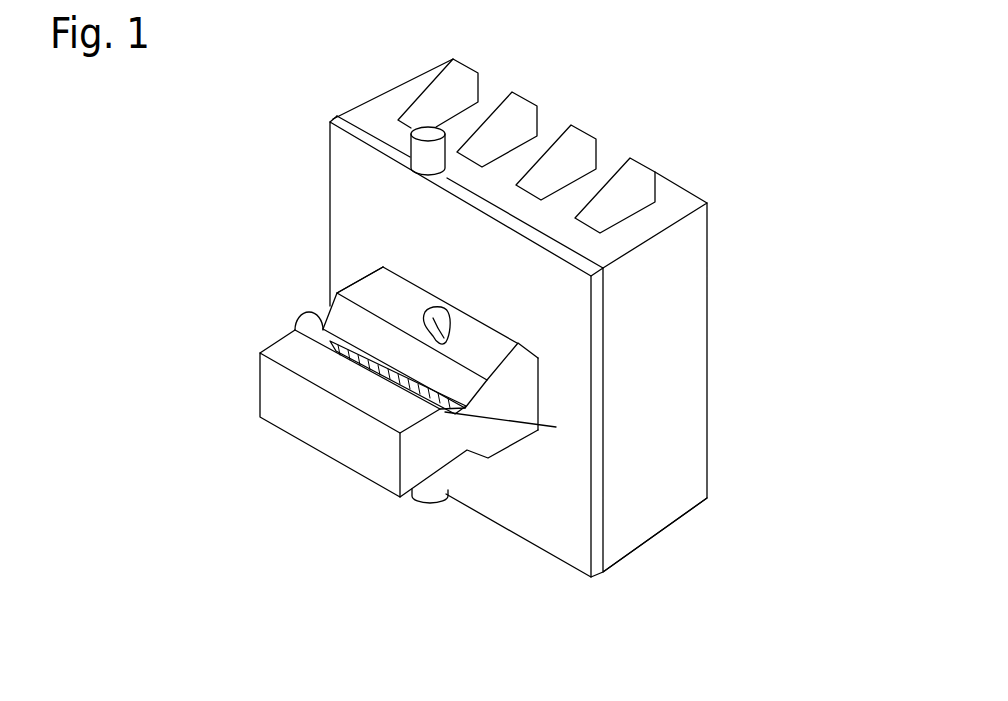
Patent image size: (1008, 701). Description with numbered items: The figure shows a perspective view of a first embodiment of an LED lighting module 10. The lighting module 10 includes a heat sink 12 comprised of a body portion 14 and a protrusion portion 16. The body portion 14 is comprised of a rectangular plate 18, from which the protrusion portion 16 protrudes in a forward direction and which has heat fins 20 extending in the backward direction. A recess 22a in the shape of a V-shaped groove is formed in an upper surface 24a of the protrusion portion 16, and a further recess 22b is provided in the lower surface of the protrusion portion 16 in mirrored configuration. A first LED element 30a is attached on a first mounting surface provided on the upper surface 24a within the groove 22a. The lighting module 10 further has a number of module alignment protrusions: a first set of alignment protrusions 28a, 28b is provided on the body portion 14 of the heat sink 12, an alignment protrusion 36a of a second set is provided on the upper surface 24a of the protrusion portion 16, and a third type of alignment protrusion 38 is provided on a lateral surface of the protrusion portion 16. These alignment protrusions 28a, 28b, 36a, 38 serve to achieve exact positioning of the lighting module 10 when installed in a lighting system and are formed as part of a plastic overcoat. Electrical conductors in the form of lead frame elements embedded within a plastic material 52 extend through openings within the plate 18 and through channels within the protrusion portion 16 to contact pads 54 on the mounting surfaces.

The LED lighting module 10 is at (769, 90).
The heat sink 12 is at (787, 475).
The body portion 14 is at (660, 551).
The protrusion portion 16 is at (418, 470).
The rectangular plate 18 is at (536, 512).
The heat fins 20 is at (572, 137).
The recess 22a is at (314, 291).
The further recess 22b is at (471, 478).
The upper surface 24a is at (290, 351).
The alignment protrusion 28a is at (411, 150).
The alignment protrusion 28b is at (423, 499).
The first LED element 30a is at (352, 365).
The alignment protrusion 36a is at (475, 300).
The alignment protrusion 38 is at (296, 318).
The plastic material 52 is at (385, 302).
The contact pads 54 is at (330, 347).